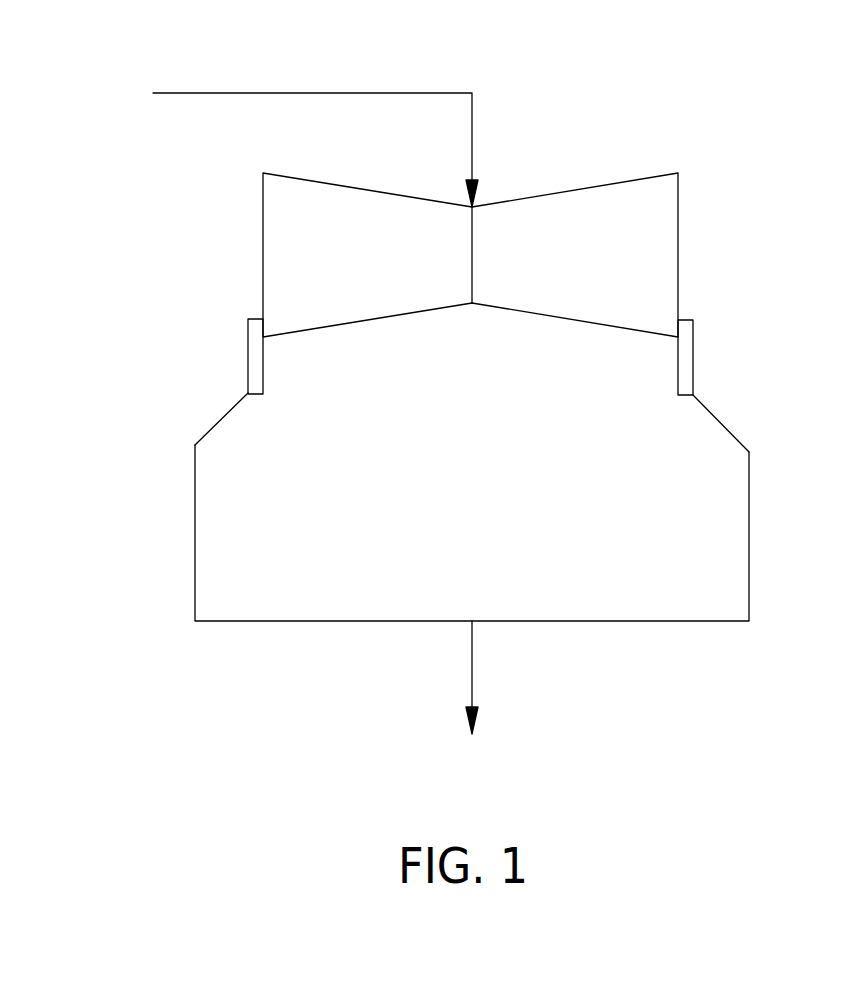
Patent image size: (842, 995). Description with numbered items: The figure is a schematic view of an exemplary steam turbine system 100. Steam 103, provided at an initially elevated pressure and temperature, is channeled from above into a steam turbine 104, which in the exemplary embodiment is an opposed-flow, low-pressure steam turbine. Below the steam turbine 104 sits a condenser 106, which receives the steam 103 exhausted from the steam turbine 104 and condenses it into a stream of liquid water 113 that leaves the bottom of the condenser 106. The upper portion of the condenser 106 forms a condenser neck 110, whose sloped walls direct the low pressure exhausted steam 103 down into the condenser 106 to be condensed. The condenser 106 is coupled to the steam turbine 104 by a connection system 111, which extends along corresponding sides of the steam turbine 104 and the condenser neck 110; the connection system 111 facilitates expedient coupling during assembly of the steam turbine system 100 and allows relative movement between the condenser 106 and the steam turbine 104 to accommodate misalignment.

The steam turbine system 100 is at (736, 140).
The steam 103 is at (337, 93).
The steam turbine 104 is at (583, 187).
The condenser 106 is at (195, 535).
The condenser neck 110 is at (213, 425).
The connection system 111 is at (248, 355).
The stream of liquid water 113 is at (473, 697).